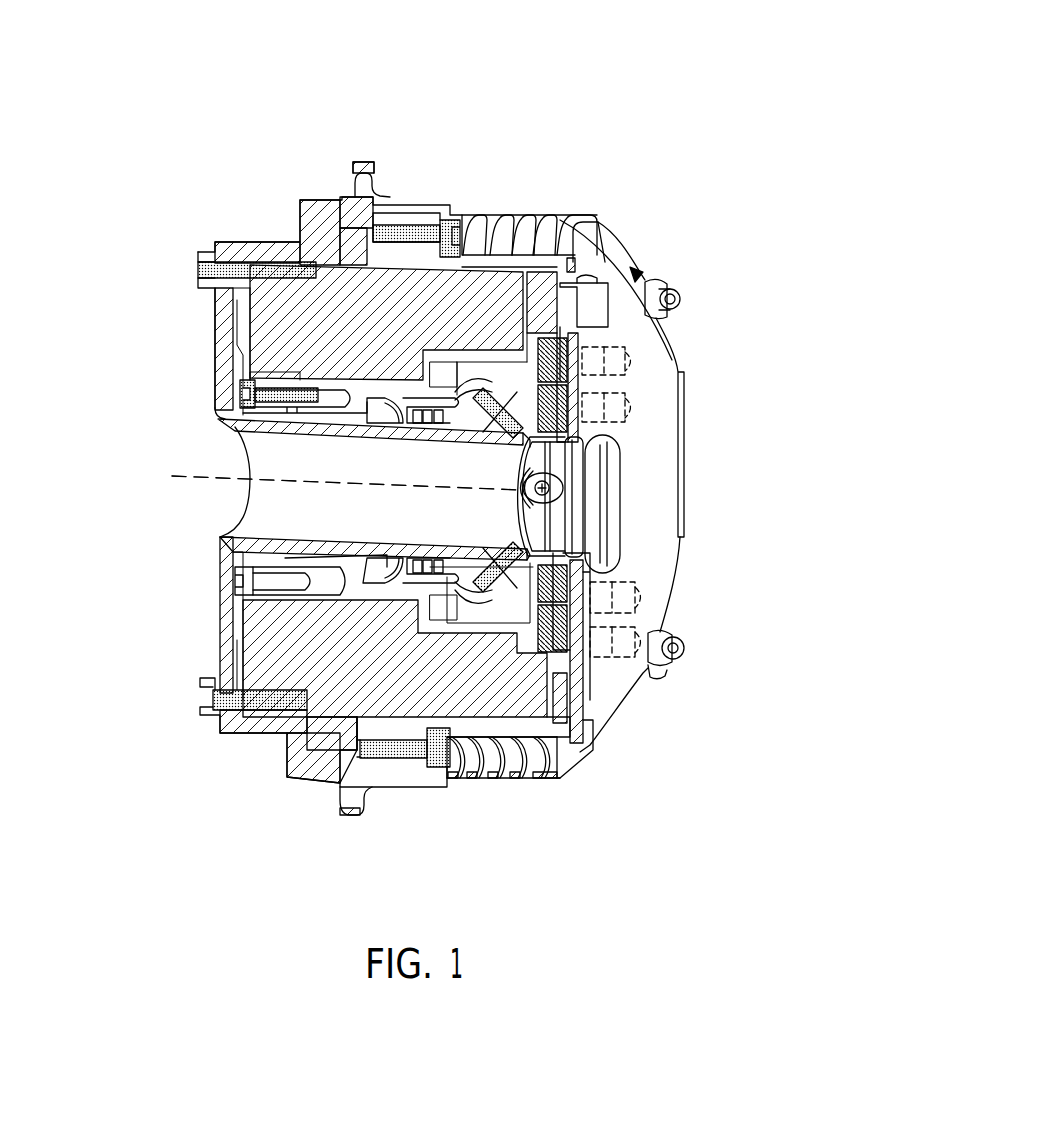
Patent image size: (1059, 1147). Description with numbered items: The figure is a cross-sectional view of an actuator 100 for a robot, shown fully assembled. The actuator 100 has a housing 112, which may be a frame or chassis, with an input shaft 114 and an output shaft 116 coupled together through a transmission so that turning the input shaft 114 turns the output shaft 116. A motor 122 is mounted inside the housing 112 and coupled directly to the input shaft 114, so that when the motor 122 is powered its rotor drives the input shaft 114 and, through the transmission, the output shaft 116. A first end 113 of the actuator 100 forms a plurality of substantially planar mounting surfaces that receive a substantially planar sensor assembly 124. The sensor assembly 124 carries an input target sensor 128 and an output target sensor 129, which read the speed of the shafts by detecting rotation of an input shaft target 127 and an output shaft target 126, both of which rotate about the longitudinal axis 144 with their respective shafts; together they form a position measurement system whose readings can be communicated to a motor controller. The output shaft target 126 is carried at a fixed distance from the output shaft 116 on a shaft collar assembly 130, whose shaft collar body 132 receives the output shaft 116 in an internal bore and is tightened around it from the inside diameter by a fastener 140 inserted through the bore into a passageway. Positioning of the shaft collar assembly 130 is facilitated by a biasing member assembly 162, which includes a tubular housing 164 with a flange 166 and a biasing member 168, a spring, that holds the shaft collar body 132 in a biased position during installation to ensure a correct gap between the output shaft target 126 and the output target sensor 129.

The actuator 100 is at (645, 33).
The housing 112 is at (488, 226).
The first end 113 is at (681, 303).
The input shaft 114 is at (527, 333).
The output shaft 116 is at (243, 465).
The motor 122 is at (530, 685).
The sensor assembly 124 is at (655, 362).
The output shaft target 126 is at (637, 272).
The input shaft target 127 is at (600, 228).
The input target sensor 128 is at (620, 355).
The output target sensor 129 is at (618, 406).
The shaft collar assembly 130 is at (580, 420).
The shaft collar body 132 is at (502, 585).
The fastener 140 is at (490, 372).
The longitudinal axis 144 is at (340, 484).
The biasing member assembly 162 is at (422, 408).
The tubular housing 164 is at (418, 557).
The flange 166 is at (406, 398).
The biasing member 168 is at (437, 587).